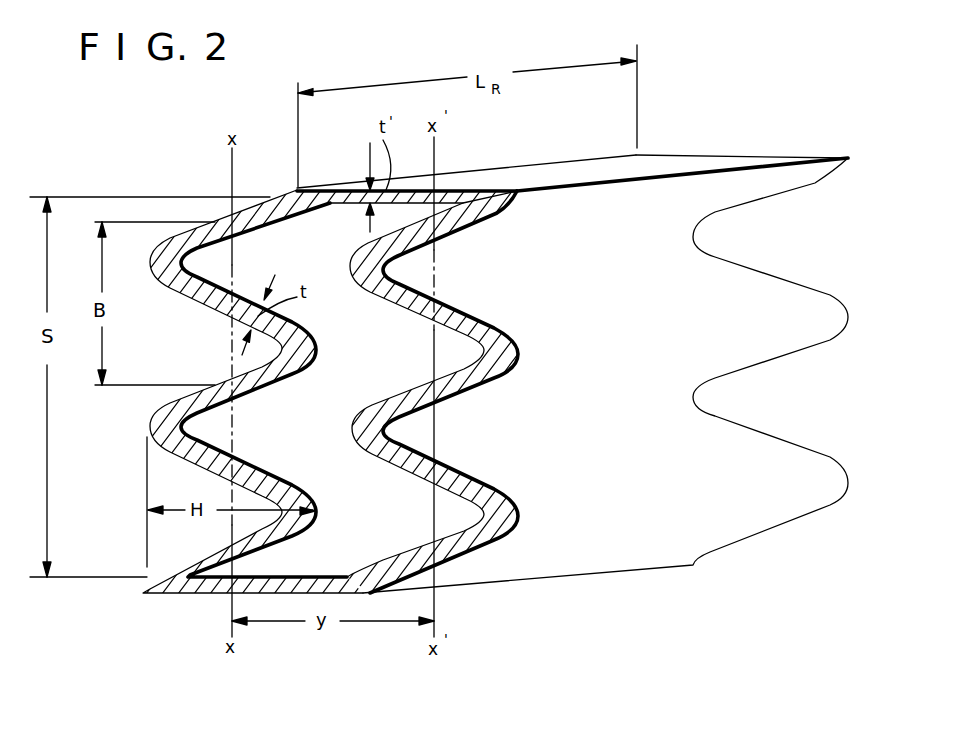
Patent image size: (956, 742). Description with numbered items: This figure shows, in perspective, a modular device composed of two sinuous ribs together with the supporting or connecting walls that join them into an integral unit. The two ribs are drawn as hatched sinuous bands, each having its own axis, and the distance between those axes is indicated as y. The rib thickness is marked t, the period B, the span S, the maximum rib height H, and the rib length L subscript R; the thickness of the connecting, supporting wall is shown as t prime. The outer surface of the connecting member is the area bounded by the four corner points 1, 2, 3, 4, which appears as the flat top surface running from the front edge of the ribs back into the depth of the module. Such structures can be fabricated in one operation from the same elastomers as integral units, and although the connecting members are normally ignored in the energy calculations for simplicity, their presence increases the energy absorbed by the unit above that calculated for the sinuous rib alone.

The corner of connecting member outer surface 1 is at (466, 171).
The corner of connecting member outer surface 2 is at (742, 147).
The corner of connecting member outer surface 3 is at (605, 365).
The corner of connecting member outer surface 4 is at (680, 174).